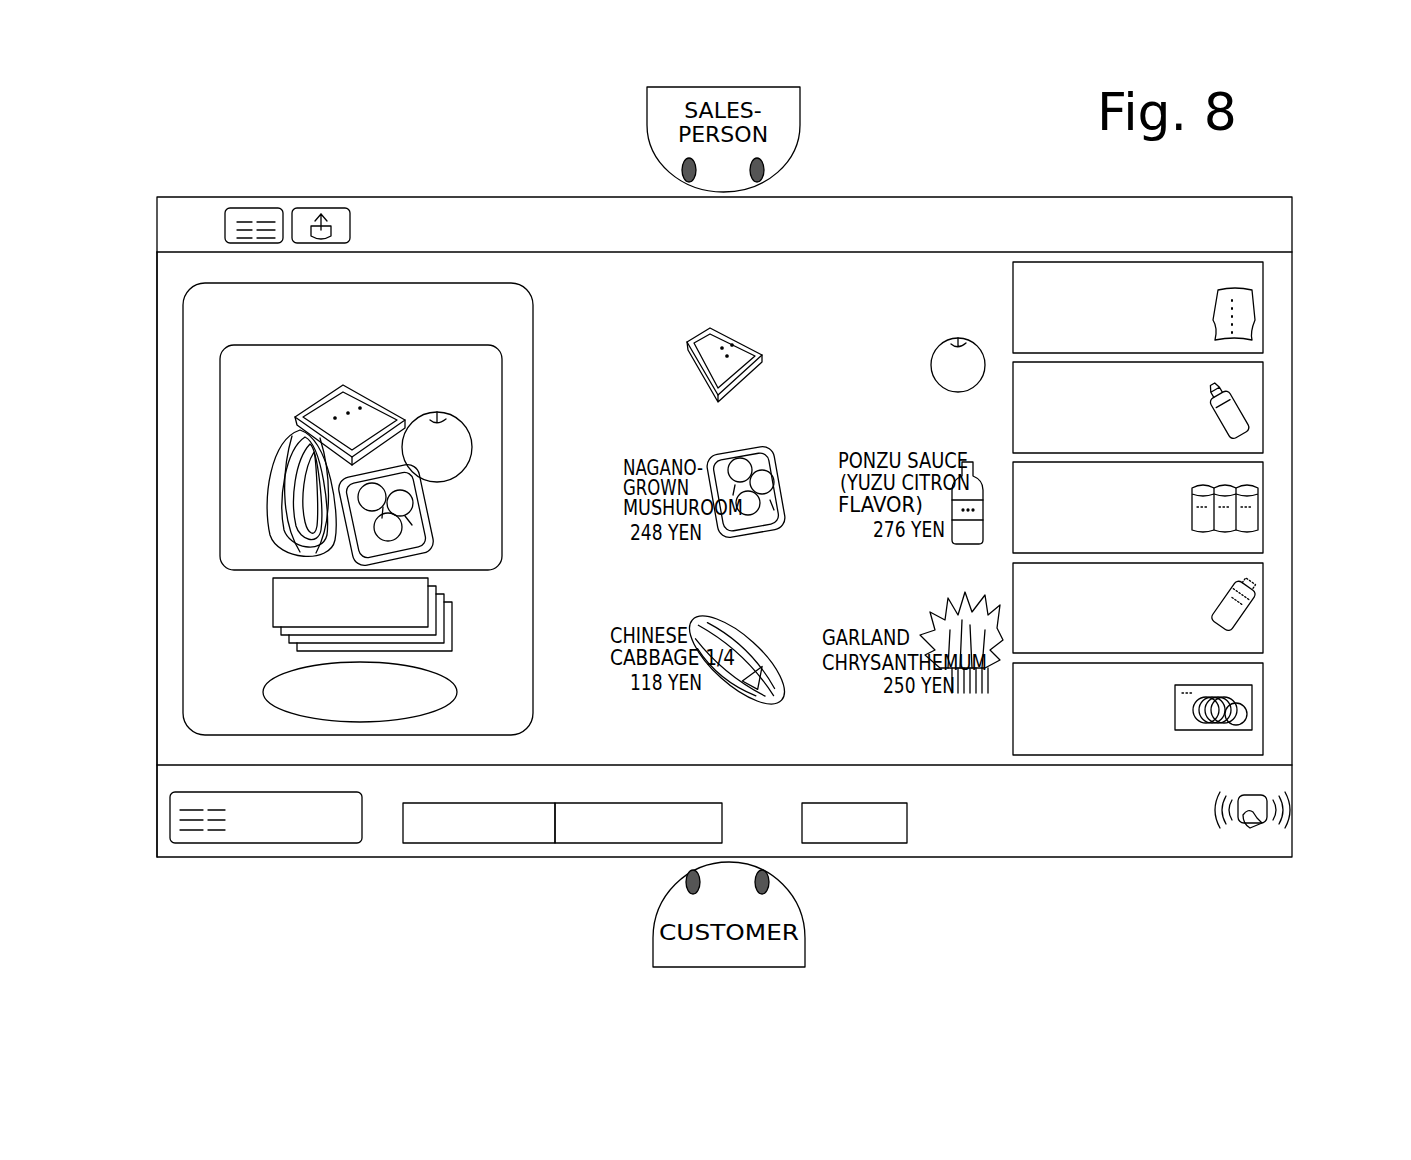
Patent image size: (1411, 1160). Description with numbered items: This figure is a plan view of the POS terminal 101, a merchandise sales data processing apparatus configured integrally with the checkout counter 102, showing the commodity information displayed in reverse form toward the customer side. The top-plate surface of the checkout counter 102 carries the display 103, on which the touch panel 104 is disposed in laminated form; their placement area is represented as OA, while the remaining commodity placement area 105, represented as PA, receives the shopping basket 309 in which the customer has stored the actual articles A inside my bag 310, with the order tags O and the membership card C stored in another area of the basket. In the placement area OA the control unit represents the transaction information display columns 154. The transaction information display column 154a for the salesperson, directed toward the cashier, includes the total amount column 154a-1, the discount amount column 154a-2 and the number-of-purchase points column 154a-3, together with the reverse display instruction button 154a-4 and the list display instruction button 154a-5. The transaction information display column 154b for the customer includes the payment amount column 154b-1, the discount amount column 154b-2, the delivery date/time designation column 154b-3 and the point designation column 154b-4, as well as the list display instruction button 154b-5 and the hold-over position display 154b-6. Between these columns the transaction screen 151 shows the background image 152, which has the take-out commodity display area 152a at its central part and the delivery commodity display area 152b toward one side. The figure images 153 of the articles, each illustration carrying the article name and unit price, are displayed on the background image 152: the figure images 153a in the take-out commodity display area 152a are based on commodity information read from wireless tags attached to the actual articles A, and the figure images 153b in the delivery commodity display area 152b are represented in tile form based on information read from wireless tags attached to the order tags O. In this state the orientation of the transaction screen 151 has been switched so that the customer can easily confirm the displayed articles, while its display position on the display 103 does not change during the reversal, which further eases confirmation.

The POS terminal 101 is at (718, 480).
The checkout counter 102 is at (157, 750).
The display 103 is at (1204, 428).
The touch panel 104 is at (1204, 428).
The commodity placement area 105 is at (177, 550).
The transaction screen 151 is at (1050, 258).
The background image 152 is at (1203, 406).
The take-out commodity display area 152a is at (644, 254).
The delivery commodity display area 152b is at (1265, 390).
The figure images 153 is at (887, 302).
The figure images of take-out articles 153a is at (633, 340).
The figure images of delivery articles 153b is at (1265, 560).
The transaction information display columns 154 is at (157, 198).
The transaction information display column for salesperson 154a is at (664, 182).
The total amount column 154a-1 is at (1240, 210).
The discount amount column 154a-2 is at (962, 210).
The number-of-purchase points column 154a-3 is at (590, 205).
The reverse display instruction button 154a-4 is at (306, 208).
The list display instruction button 154a-5 is at (230, 208).
The transaction information display column for customer 154b is at (766, 834).
The payment amount column 154b-1 is at (1185, 847).
The discount amount column 154b-2 is at (1060, 847).
The delivery date/time designation column 154b-3 is at (502, 843).
The point designation column 154b-4 is at (895, 850).
The list display instruction button 154b-5 is at (296, 843).
The hold-over position display 154b-6 is at (1258, 820).
The shopping basket 309 is at (299, 509).
The my bag 310 is at (297, 457).
The articles A is at (300, 413).
The commodity placement area PA is at (299, 509).
The order tags O is at (273, 613).
The membership card C is at (270, 700).
The placement area of display and touch panel OA is at (1190, 227).